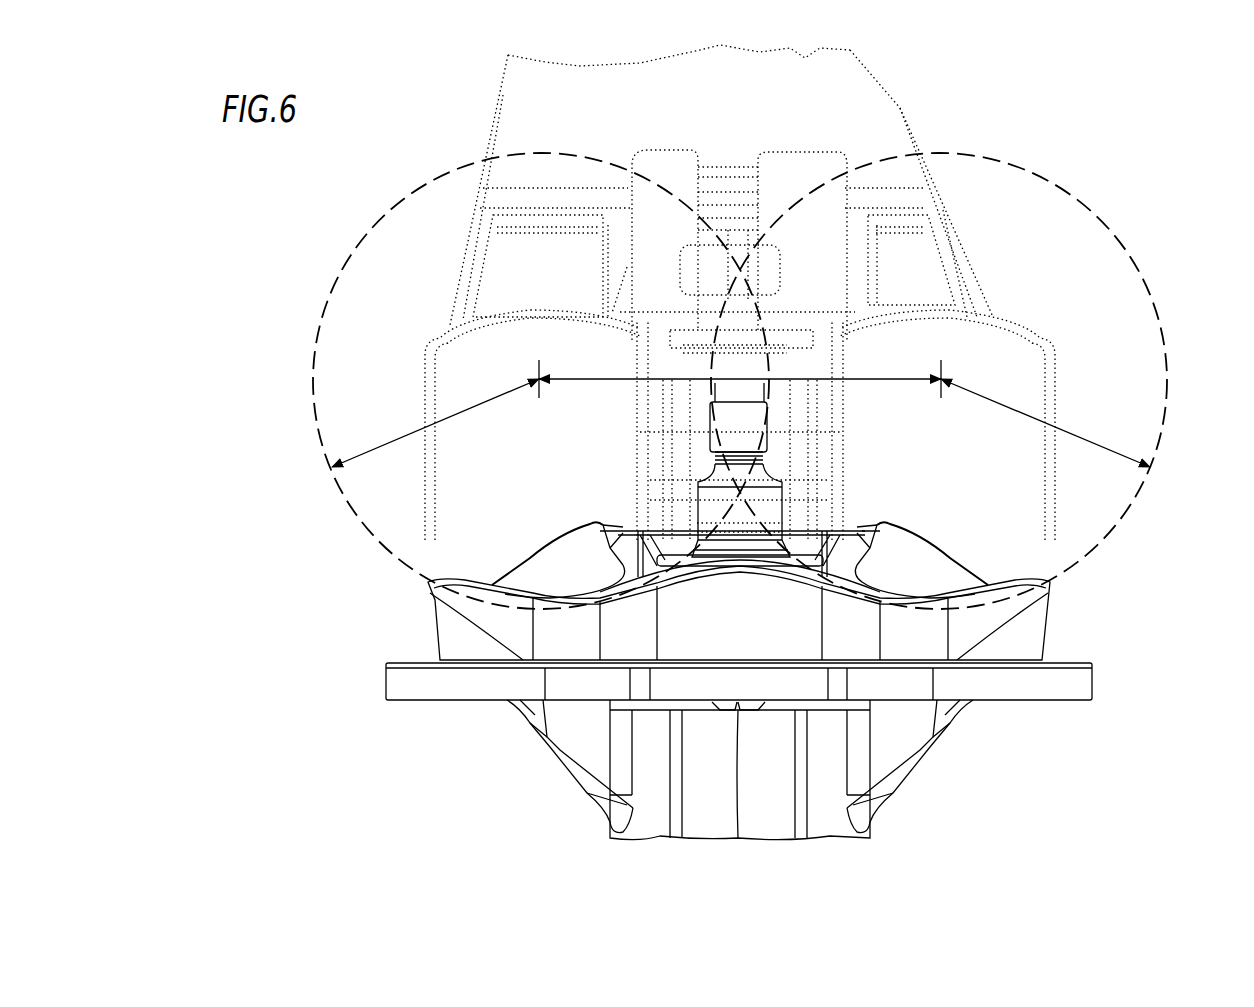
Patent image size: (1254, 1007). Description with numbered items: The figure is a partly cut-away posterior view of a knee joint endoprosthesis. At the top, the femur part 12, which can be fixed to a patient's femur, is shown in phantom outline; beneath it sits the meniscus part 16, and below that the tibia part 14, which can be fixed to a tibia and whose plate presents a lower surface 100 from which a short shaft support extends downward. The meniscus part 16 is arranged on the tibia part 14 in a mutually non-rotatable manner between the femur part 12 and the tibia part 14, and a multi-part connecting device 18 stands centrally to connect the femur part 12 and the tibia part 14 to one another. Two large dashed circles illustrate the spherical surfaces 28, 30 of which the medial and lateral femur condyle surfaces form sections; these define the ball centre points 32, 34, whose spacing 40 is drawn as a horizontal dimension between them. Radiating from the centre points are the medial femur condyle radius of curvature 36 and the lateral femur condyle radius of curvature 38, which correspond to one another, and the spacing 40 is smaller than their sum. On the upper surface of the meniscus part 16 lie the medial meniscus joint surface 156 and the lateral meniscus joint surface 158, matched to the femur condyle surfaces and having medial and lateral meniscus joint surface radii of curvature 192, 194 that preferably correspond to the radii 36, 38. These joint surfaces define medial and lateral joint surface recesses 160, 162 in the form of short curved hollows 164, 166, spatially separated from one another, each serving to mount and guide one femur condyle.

The femur part 12 is at (906, 106).
The tibia part 14 is at (968, 742).
The meniscus part 16 is at (1055, 601).
The connecting device 18 is at (778, 437).
The spherical surface 28 is at (313, 373).
The spherical surface 30 is at (1177, 348).
The ball centre point 32 is at (538, 377).
The ball centre point 34 is at (942, 377).
The medial femur condyle radius of curvature 36 is at (452, 410).
The lateral femur condyle radius of curvature 38 is at (1031, 410).
The spacing 40 is at (772, 380).
The lower surface 100 is at (445, 703).
The medial meniscus joint surface 156 is at (1000, 597).
The lateral meniscus joint surface 158 is at (473, 580).
The medial joint surface recess 160 is at (900, 550).
The lateral joint surface recess 162 is at (537, 567).
The short curved hollow 164 is at (930, 567).
The short curved hollow 166 is at (567, 557).
The medial meniscus joint surface radius of curvature 192 is at (392, 440).
The lateral meniscus joint surface radius of curvature 194 is at (1090, 440).